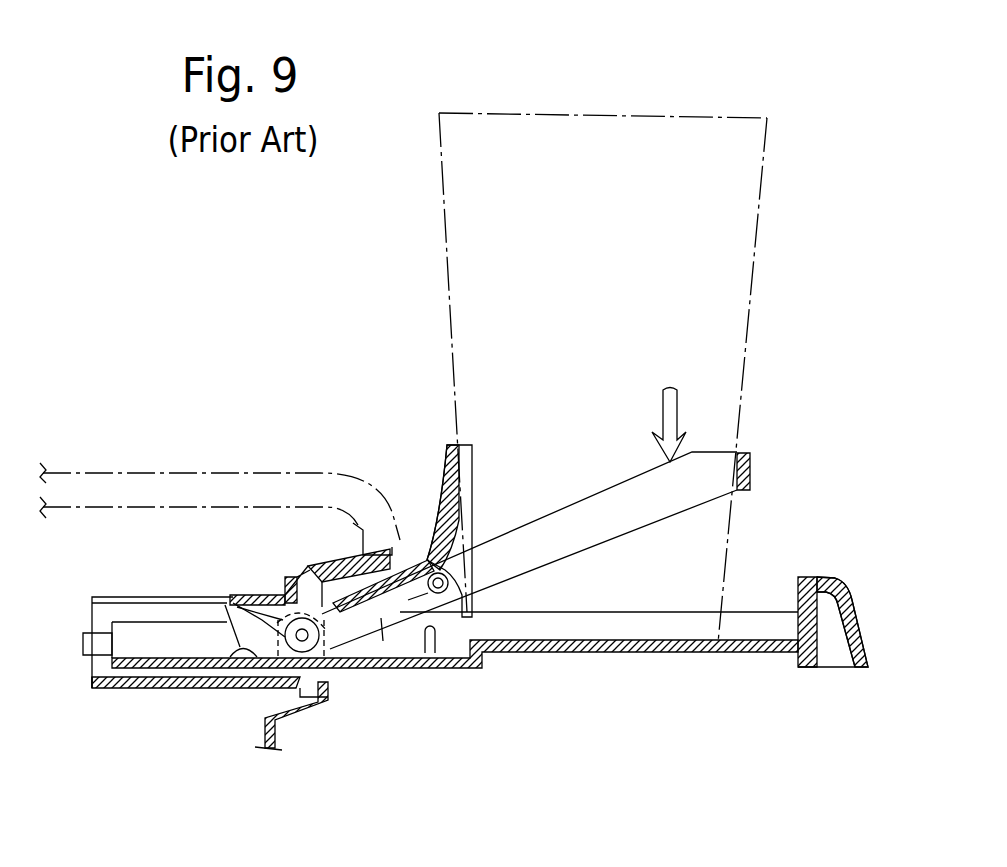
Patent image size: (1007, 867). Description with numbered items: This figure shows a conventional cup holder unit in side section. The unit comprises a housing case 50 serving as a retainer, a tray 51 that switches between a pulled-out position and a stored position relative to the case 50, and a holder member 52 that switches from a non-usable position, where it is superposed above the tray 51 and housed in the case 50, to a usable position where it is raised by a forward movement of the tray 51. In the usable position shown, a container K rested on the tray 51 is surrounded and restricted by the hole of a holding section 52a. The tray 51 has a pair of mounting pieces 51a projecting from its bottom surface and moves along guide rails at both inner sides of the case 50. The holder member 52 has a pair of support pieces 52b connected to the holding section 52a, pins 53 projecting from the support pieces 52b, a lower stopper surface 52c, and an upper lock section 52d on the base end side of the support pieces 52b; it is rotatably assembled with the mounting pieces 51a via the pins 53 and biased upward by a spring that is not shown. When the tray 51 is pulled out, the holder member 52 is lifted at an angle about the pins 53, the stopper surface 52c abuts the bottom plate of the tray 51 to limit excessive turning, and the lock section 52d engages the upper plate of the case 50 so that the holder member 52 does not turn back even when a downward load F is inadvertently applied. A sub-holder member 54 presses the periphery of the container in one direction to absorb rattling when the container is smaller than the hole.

The container K is at (568, 113).
The downward load F is at (669, 404).
The housing case 50 is at (147, 695).
The tray 51 is at (650, 660).
The mounting pieces 51a is at (272, 590).
The holder member 52 is at (760, 462).
The holding section 52a is at (578, 500).
The support pieces 52b is at (386, 645).
The stopper surface 52c is at (228, 660).
The lock section 52d is at (237, 622).
The pins 53 is at (345, 660).
The sub-holder member 54 is at (449, 447).